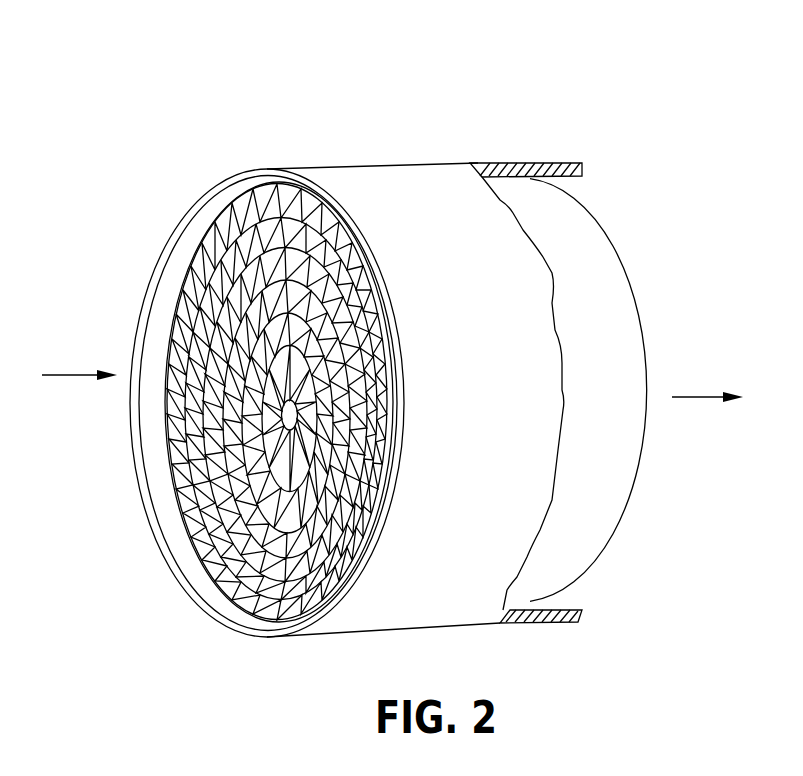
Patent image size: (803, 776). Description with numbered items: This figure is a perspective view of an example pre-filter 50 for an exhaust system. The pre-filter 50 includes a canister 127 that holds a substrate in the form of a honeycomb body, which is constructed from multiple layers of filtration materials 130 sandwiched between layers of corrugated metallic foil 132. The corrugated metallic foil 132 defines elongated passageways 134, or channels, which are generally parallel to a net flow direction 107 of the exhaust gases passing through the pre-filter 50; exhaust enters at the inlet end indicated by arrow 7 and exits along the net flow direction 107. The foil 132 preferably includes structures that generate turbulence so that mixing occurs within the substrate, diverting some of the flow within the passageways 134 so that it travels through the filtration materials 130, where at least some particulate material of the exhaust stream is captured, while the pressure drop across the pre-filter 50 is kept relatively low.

The pre-filter 50 is at (407, 79).
The canister 127 is at (503, 163).
The exhaust gas inlet flow 7 is at (60, 375).
The net flow direction 107 is at (690, 396).
The filtration materials 130 is at (173, 476).
The corrugated metallic foil 132 is at (177, 487).
The elongated passageways 134 is at (167, 423).